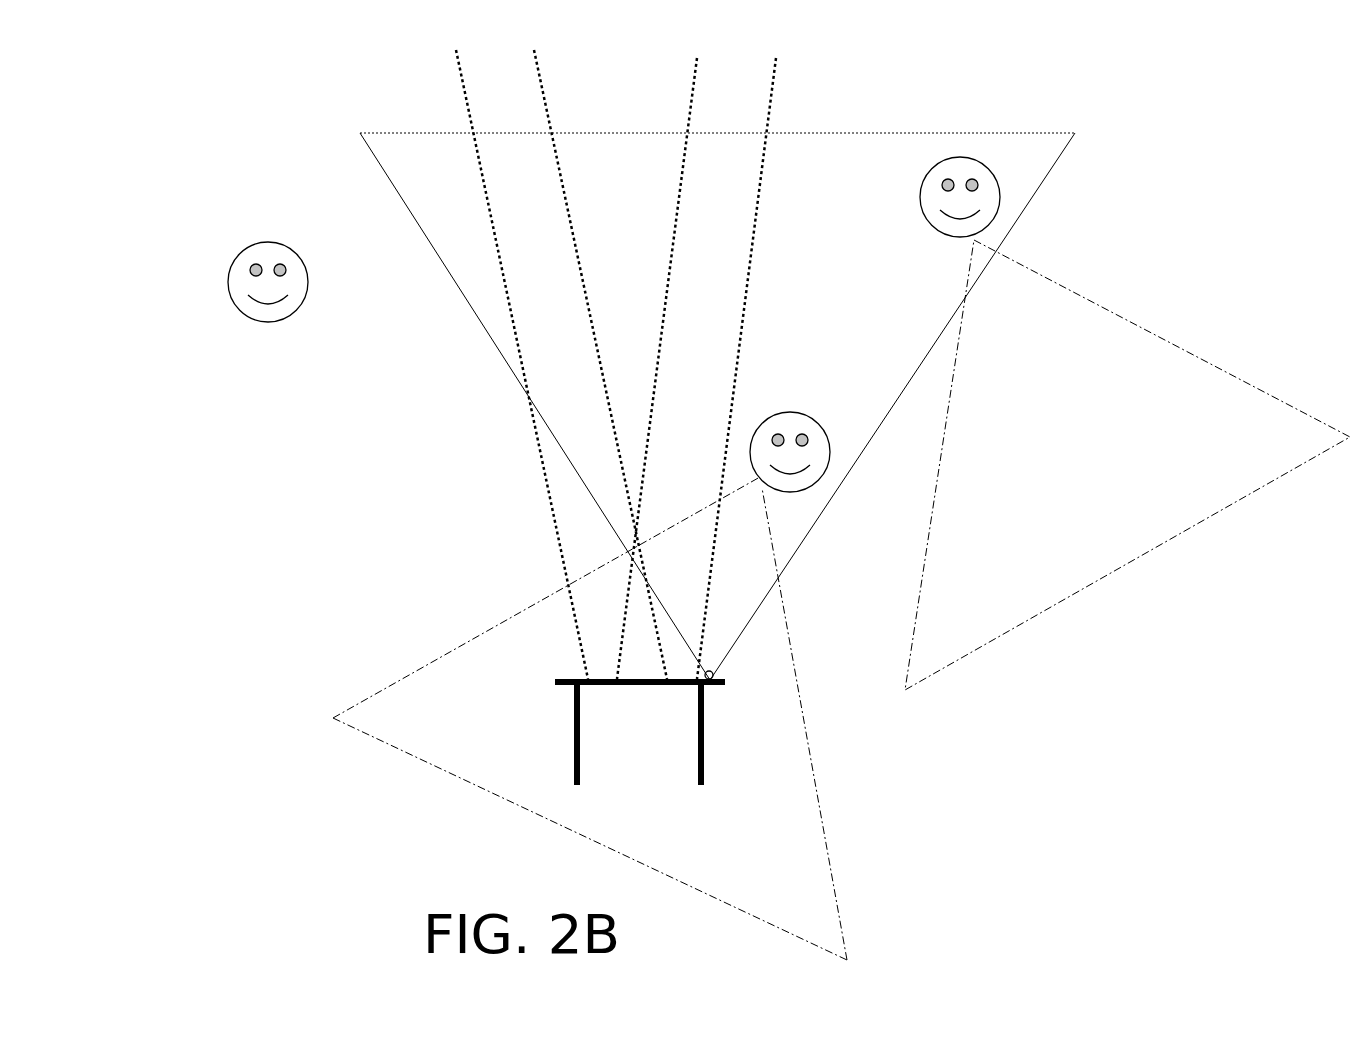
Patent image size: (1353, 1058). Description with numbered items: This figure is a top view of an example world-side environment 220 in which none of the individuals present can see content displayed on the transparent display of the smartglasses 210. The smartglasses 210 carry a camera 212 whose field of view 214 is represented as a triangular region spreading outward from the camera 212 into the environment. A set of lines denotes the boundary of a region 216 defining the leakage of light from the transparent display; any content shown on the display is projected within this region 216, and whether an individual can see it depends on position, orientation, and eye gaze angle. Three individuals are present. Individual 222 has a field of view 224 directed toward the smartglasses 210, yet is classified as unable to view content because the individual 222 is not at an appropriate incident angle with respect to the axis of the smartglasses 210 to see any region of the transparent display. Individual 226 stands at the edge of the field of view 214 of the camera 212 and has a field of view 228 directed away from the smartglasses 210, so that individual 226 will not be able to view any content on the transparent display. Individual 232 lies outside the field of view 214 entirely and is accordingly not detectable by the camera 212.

The smartglasses 210 is at (571, 714).
The camera 212 is at (727, 683).
The field of view 214 is at (875, 418).
The region 216 is at (459, 78).
The environment 220 is at (167, 94).
The individual 222 is at (818, 486).
The field of view 224 is at (822, 783).
The individual 226 is at (985, 221).
The field of view 228 is at (1128, 322).
The individual 232 is at (228, 291).